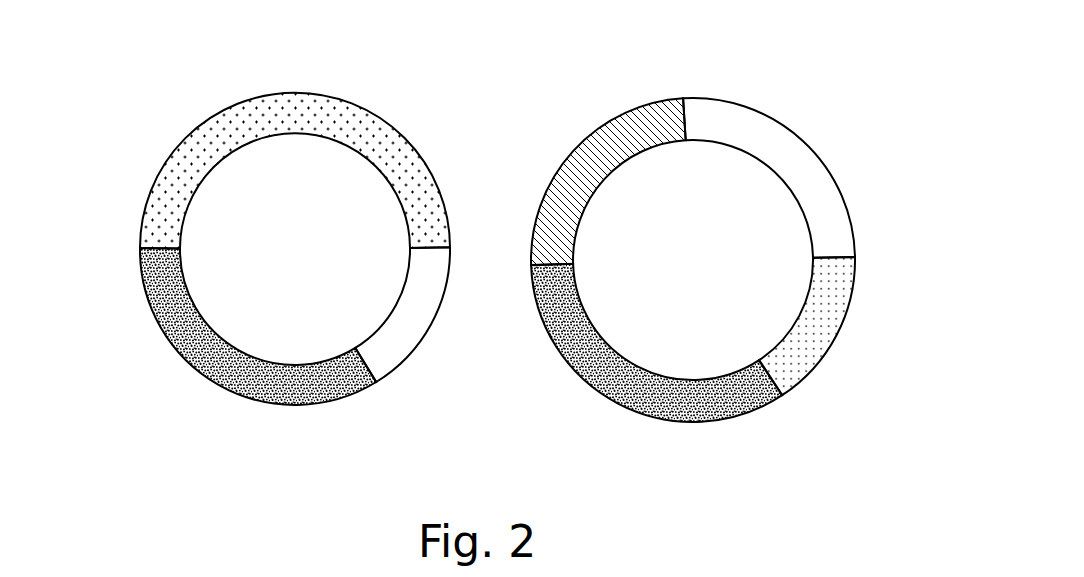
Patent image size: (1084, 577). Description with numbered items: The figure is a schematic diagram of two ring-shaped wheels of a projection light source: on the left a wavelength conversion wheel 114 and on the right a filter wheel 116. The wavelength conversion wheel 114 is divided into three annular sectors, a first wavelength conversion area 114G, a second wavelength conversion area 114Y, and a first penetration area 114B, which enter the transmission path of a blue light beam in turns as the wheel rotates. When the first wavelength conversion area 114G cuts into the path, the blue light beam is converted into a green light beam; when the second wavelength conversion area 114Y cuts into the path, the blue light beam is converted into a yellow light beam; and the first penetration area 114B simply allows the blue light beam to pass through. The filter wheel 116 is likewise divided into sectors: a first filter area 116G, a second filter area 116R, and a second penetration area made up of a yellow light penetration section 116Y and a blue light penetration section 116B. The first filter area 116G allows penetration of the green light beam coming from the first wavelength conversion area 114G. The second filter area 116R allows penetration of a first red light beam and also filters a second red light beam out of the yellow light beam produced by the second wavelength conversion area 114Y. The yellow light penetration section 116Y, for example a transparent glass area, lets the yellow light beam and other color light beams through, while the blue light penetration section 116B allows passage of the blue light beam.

The wavelength conversion wheel 114 is at (275, 269).
The second wavelength conversion area 114Y is at (298, 115).
The first wavelength conversion area 114G is at (170, 340).
The first penetration area 114B is at (412, 317).
The filter wheel 116 is at (710, 280).
The second filter area 116R is at (590, 140).
The yellow light penetration section 116Y is at (787, 152).
The blue light penetration section 116B is at (807, 338).
The first filter area 116G is at (683, 422).